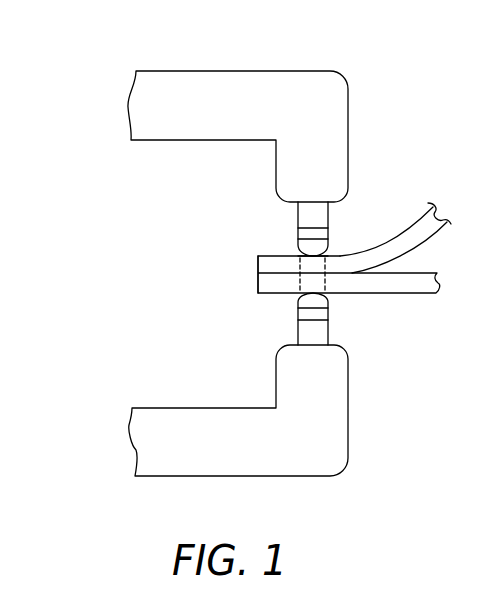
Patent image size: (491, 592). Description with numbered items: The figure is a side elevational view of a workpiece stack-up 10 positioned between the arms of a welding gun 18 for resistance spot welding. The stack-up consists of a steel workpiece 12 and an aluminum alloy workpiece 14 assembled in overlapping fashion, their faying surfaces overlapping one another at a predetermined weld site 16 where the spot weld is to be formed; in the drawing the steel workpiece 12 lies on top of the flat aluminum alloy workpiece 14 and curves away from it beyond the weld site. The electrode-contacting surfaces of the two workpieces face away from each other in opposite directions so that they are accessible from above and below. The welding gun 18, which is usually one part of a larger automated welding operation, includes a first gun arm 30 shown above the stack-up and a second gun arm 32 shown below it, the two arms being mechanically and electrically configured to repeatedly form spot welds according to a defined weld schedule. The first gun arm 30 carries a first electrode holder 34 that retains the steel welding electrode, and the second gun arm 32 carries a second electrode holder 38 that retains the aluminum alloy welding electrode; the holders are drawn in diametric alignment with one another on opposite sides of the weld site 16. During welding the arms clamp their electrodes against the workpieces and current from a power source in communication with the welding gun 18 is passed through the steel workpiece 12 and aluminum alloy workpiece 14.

The workpiece stack-up 10 is at (258, 275).
The steel workpiece 12 is at (426, 230).
The aluminum alloy workpiece 14 is at (410, 285).
The weld site 16 is at (300, 267).
The welding gun 18 is at (123, 101).
The first gun arm 30 is at (320, 106).
The second gun arm 32 is at (320, 443).
The first electrode holder 34 is at (308, 219).
The second electrode holder 38 is at (308, 328).